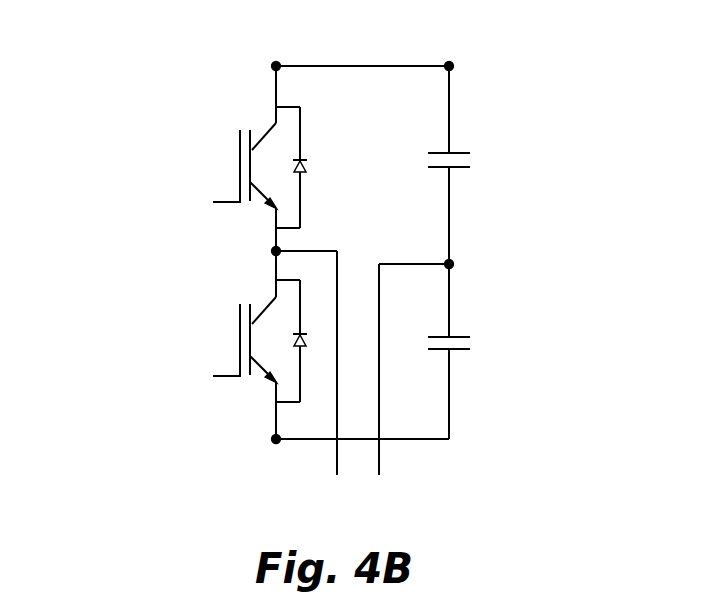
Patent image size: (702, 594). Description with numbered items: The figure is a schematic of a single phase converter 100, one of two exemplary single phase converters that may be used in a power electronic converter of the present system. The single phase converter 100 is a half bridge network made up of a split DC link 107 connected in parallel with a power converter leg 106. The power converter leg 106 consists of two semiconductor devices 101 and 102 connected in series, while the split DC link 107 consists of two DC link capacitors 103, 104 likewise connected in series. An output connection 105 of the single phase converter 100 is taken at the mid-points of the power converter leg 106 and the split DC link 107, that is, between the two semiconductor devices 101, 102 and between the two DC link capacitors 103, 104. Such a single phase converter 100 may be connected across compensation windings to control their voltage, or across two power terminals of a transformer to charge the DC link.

The single phase converter 100 is at (111, 57).
The semiconductor device 101 is at (211, 149).
The semiconductor device 102 is at (214, 325).
The DC link capacitor 103 is at (486, 152).
The DC link capacitor 104 is at (486, 335).
The output connection 105 is at (382, 483).
The power converter leg 106 is at (274, 87).
The split DC link 107 is at (451, 87).